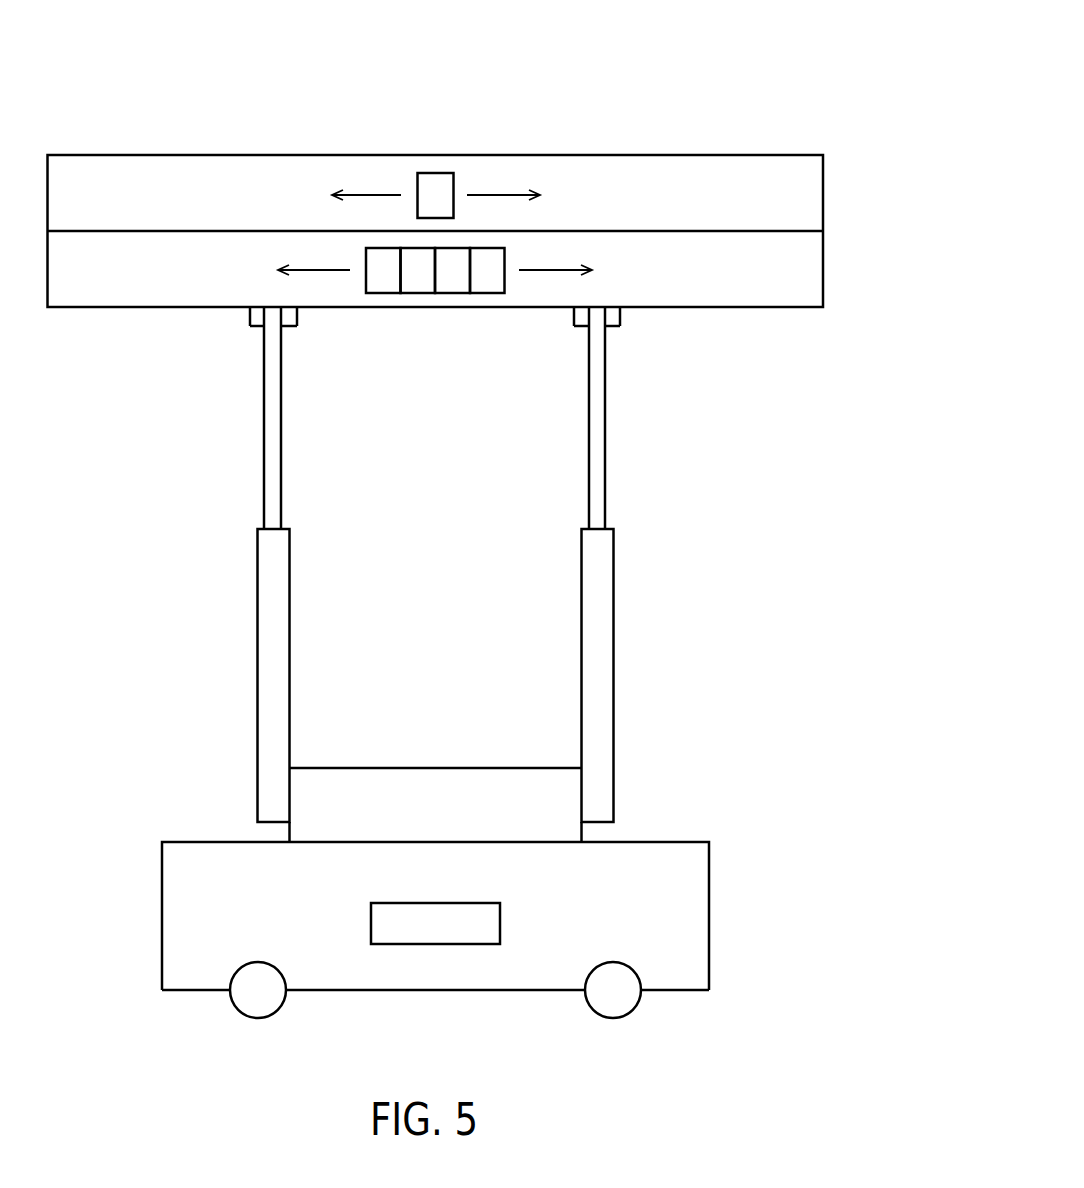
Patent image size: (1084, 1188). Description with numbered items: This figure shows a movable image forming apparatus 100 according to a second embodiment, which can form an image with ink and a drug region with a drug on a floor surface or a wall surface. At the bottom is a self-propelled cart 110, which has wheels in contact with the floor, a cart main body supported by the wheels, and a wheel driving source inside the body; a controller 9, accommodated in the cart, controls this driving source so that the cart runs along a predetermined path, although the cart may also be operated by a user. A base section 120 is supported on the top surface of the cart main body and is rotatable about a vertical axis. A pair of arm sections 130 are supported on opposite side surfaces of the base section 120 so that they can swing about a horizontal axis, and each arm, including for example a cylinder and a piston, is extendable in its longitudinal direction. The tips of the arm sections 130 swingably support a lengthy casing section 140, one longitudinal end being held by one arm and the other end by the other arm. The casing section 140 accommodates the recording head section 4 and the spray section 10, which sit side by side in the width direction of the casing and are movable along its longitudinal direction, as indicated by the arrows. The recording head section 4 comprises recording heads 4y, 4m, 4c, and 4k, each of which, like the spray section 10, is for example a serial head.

The image forming apparatus 100 is at (436, 538).
The casing section 140 is at (748, 312).
The spray section 10 is at (452, 168).
The recording head section 4 is at (435, 314).
The recording head 4y is at (382, 283).
The recording head 4m is at (418, 283).
The recording head 4c is at (455, 283).
The recording head 4k is at (492, 283).
The arm sections 130 is at (273, 602).
The base section 120 is at (472, 790).
The self-propelled cart 110 is at (692, 896).
The controller 9 is at (463, 945).